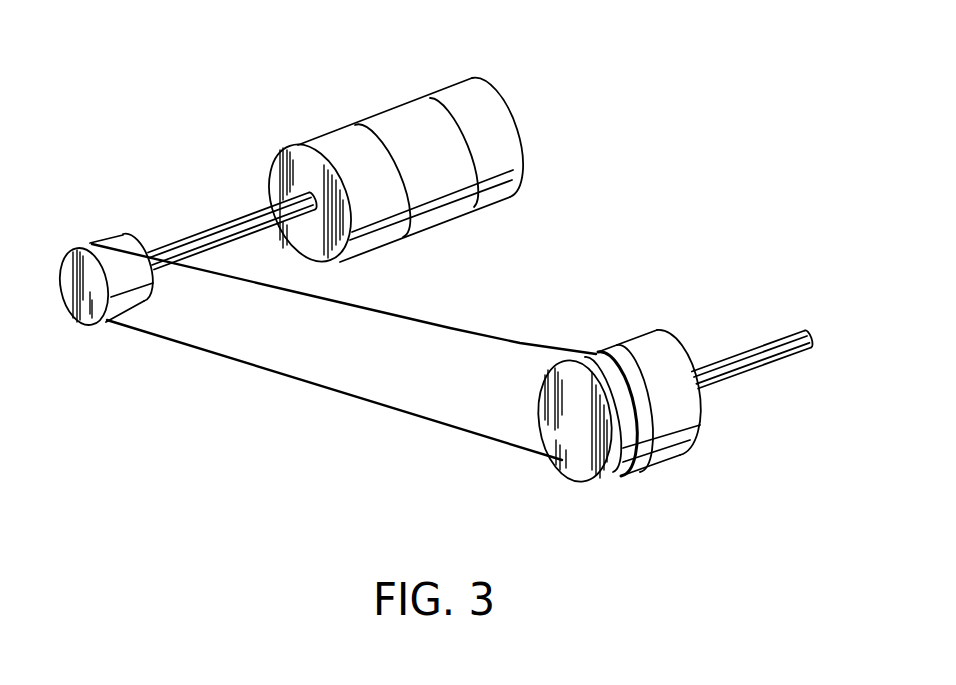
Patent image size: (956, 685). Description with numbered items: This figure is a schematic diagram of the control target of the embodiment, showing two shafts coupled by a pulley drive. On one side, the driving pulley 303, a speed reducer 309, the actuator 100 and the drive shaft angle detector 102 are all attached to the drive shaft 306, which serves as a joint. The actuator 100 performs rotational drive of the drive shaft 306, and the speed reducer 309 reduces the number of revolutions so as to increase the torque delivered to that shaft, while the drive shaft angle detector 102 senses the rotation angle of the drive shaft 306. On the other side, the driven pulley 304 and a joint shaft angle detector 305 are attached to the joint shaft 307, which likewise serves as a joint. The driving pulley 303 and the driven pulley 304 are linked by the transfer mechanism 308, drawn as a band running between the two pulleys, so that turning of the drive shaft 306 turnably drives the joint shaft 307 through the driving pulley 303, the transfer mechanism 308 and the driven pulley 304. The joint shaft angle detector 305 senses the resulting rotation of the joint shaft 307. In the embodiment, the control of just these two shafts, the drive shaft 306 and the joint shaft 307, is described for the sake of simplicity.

The actuator 100 is at (413, 117).
The drive shaft angle detector 102 is at (510, 143).
The driving pulley 303 is at (112, 240).
The driven pulley 304 is at (585, 452).
The joint shaft angle detector 305 is at (674, 425).
The drive shaft 306 is at (218, 230).
The joint shaft 307 is at (760, 350).
The transfer mechanism 308 is at (478, 333).
The speed reducer 309 is at (330, 133).